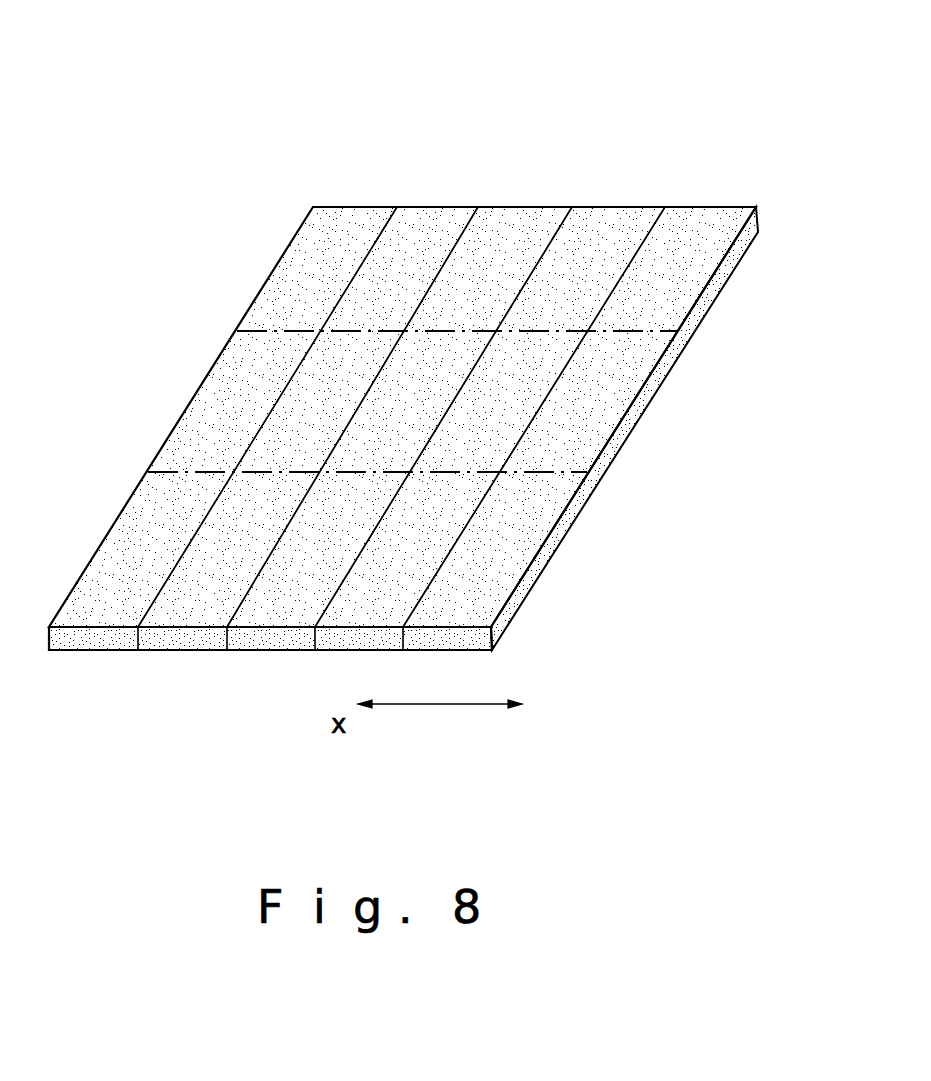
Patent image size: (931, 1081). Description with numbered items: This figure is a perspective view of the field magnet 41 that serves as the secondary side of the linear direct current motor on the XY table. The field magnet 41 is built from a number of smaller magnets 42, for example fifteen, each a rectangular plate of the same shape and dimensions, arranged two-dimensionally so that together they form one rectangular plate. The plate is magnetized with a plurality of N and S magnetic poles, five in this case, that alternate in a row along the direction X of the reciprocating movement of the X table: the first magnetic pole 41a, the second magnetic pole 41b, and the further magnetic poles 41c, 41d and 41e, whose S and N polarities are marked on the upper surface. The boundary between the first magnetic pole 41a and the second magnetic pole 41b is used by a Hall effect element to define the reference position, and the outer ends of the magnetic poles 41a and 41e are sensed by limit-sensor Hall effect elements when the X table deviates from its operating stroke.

The field magnet 41 is at (697, 148).
The first magnetic pole 41a is at (215, 395).
The second magnetic pole 41b is at (317, 368).
The magnetic pole 41c is at (440, 373).
The magnetic pole 41d is at (527, 391).
The magnetic pole 41e is at (573, 444).
The smaller magnets 42 is at (531, 217).